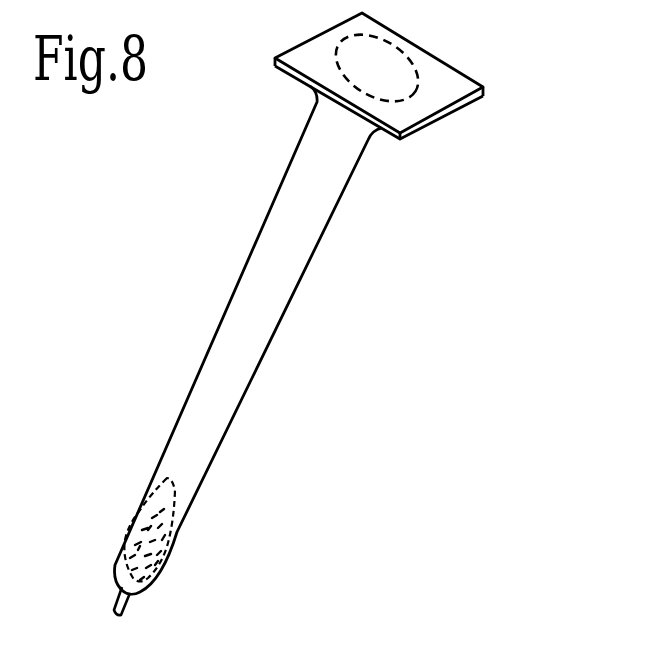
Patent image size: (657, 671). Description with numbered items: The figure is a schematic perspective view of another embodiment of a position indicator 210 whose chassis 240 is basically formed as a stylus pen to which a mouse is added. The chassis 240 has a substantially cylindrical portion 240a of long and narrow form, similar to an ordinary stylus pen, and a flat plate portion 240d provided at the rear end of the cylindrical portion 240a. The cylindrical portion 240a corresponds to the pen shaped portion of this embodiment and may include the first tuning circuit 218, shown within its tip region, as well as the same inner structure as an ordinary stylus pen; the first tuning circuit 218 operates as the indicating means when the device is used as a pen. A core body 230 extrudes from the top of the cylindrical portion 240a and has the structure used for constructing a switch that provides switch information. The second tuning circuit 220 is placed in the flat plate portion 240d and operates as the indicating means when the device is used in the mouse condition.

The indicator 210 is at (392, 304).
The chassis 240 is at (293, 158).
The cylindrical portion 240a is at (275, 333).
The flat plate portion 240d is at (427, 90).
The second tuning circuit 220 is at (423, 74).
The first tuning circuit 218 is at (170, 528).
The core body 230 is at (128, 605).